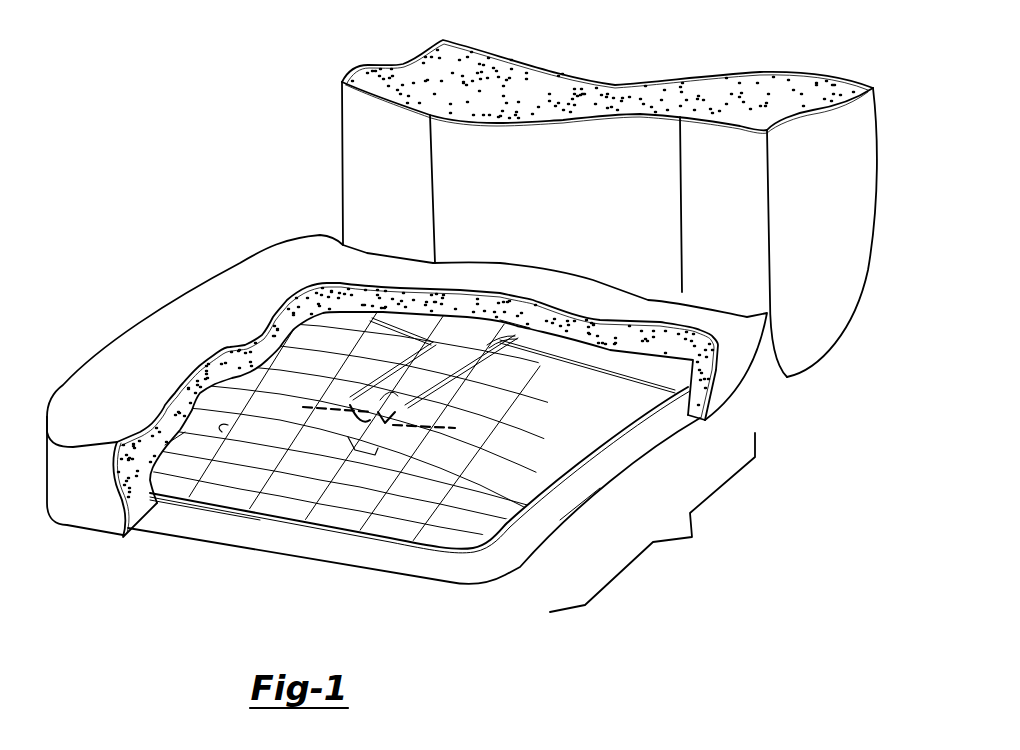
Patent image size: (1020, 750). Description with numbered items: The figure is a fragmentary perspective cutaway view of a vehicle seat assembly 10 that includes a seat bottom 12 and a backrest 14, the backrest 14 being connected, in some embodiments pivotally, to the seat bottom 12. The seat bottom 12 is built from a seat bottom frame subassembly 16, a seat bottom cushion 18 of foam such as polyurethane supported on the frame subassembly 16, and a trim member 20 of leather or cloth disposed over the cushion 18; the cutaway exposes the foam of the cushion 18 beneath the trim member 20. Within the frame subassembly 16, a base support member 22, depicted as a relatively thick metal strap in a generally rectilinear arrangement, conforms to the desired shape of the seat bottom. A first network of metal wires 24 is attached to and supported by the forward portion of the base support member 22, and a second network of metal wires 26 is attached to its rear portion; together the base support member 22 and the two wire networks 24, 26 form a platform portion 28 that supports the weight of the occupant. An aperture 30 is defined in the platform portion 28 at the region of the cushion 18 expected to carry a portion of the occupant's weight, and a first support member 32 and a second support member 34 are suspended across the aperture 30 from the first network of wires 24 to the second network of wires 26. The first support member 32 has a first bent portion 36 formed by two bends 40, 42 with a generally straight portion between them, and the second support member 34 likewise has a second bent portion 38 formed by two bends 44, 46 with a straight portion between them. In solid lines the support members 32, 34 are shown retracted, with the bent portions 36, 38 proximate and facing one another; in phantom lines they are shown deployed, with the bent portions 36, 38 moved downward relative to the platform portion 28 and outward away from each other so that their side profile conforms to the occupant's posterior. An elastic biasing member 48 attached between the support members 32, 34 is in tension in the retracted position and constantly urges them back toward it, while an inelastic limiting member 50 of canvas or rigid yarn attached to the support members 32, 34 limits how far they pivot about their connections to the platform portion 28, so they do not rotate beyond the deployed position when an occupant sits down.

The vehicle seat assembly 10 is at (464, 335).
The seat bottom 12 is at (407, 449).
The backrest 14 is at (743, 57).
The seat bottom frame subassembly 16 is at (313, 558).
The seat bottom cushion 18 is at (270, 345).
The trim member 20 is at (193, 383).
The base support member 22 is at (562, 490).
The first network of metal wires 24 is at (387, 523).
The second network of metal wires 26 is at (517, 327).
The platform portion 28 is at (652, 522).
The aperture 30 is at (615, 408).
The first support member 32 is at (400, 396).
The second support member 34 is at (450, 375).
The first bent portion 36 is at (397, 367).
The second bent portion 38 is at (417, 430).
The bend 40 is at (303, 430).
The bend 42 is at (430, 343).
The bend 44 is at (357, 440).
The bend 46 is at (487, 345).
The biasing member 48 is at (390, 393).
The limiting member 50 is at (360, 413).